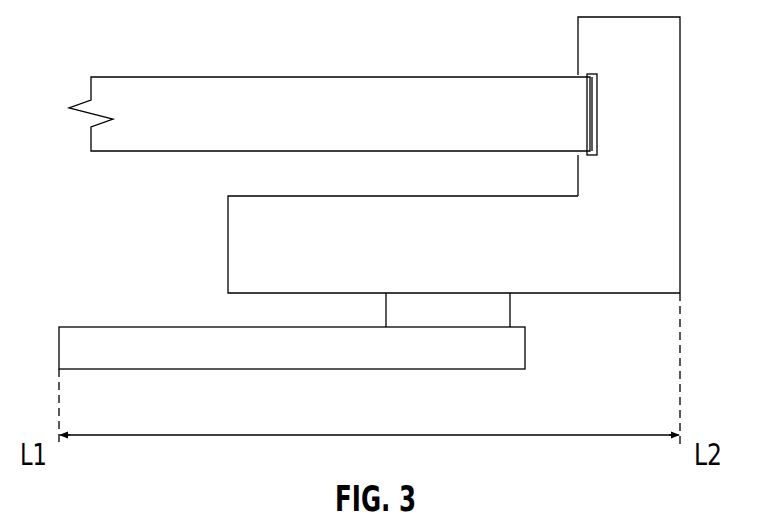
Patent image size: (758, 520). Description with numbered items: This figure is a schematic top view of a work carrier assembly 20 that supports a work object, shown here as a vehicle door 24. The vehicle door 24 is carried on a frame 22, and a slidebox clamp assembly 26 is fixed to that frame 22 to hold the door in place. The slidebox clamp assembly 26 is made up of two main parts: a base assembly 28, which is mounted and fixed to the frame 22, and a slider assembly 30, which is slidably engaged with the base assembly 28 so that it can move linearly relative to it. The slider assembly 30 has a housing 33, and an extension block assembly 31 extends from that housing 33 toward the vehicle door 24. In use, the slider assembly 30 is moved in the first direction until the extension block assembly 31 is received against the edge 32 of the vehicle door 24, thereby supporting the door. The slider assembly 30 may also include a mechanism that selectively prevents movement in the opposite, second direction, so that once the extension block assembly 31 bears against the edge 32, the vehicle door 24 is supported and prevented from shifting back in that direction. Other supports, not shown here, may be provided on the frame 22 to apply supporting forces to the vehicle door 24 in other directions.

The work carrier assembly 20 is at (98, 43).
The frame 22 is at (197, 348).
The vehicle door 24 is at (308, 88).
The slidebox clamp assembly 26 is at (218, 277).
The base assembly 28 is at (487, 303).
The slider assembly 30 is at (250, 237).
The extension block assembly 31 is at (660, 128).
The edge 32 is at (597, 110).
The housing 33 is at (605, 235).